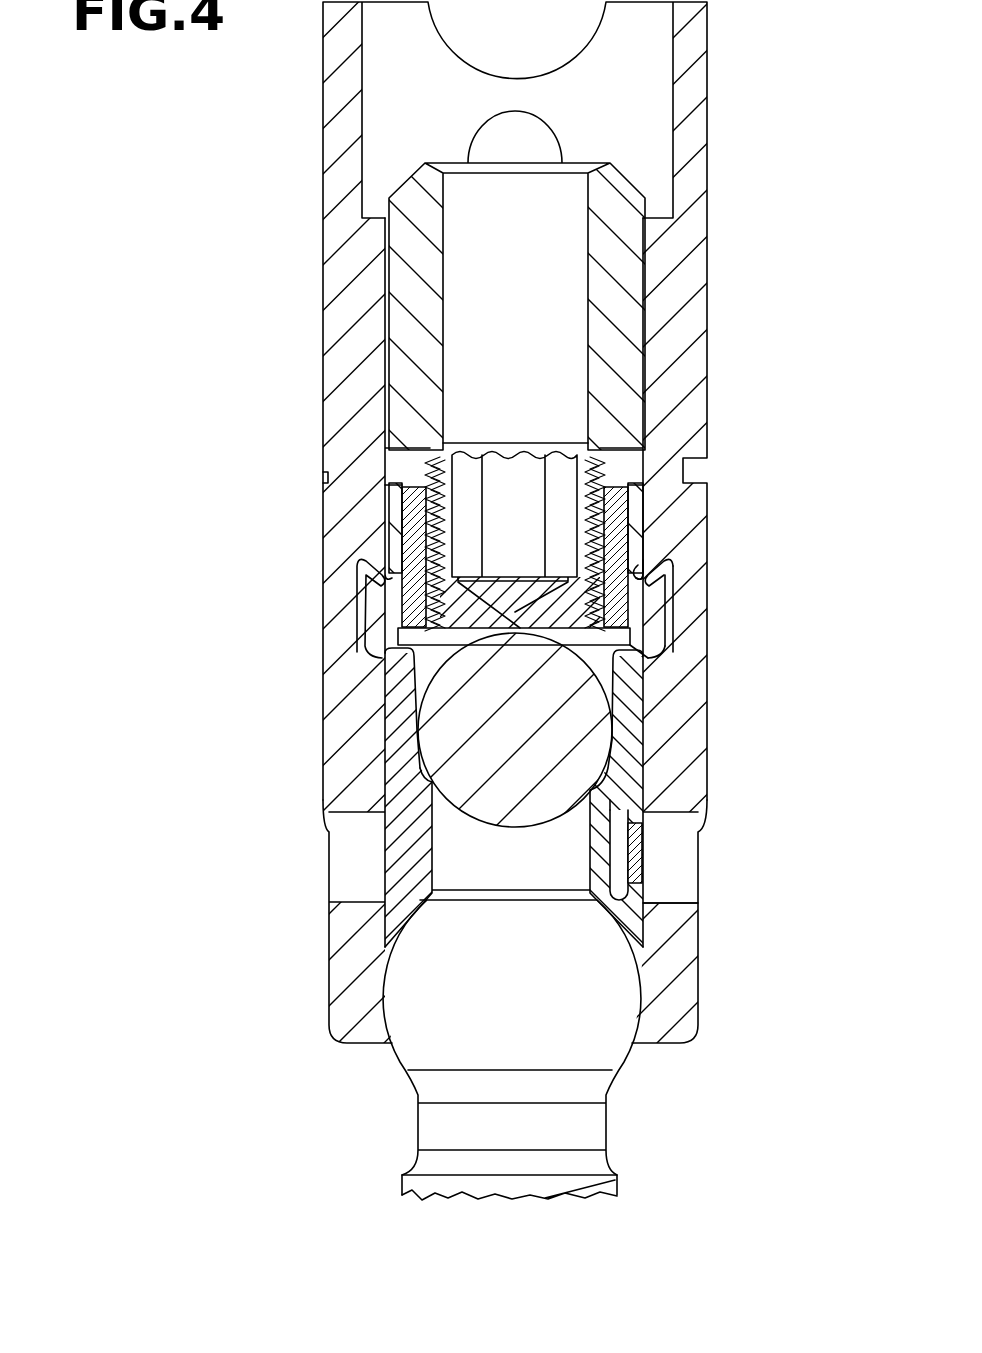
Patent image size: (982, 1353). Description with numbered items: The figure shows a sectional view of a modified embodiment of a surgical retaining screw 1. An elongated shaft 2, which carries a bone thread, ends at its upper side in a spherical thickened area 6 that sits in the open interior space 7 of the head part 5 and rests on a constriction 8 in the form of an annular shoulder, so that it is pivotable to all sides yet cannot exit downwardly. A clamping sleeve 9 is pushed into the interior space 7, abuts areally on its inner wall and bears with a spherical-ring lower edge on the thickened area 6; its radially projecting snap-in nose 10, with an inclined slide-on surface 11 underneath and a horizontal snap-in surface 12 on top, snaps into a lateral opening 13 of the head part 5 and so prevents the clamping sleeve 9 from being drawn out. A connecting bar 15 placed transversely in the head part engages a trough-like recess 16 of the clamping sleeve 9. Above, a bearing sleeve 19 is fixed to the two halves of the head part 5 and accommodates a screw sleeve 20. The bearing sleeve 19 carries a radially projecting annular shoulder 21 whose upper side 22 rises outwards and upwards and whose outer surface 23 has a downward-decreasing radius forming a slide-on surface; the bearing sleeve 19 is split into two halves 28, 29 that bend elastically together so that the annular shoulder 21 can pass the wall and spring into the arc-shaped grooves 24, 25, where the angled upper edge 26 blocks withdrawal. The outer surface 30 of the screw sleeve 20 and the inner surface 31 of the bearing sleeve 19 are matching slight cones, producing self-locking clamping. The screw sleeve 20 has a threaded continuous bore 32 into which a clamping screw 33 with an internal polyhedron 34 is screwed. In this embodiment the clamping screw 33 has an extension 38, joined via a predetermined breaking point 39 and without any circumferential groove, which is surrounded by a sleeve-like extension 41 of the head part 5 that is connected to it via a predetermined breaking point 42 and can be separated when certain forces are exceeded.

The surgical retaining screw 1 is at (726, 109).
The shaft 2 is at (626, 1181).
The head part 5 is at (720, 746).
The spherical thickened area 6 is at (512, 1004).
The interior space 7 is at (388, 736).
The constriction 8 is at (640, 1012).
The clamping sleeve 9 is at (377, 783).
The snap-in nose 10 is at (646, 854).
The slide-on surface 11 is at (648, 866).
The snap-in surface 12 is at (645, 846).
The opening 13 is at (686, 899).
The connecting bar 15 is at (522, 724).
The trough-like recess 16 is at (425, 776).
The bearing sleeve 19 is at (386, 508).
The screw sleeve 20 is at (620, 484).
The annular shoulder 21 is at (666, 575).
The upper side 22 is at (655, 546).
The outer surface 23 is at (674, 606).
The arc-shaped groove 24 is at (376, 646).
The arc-shaped groove 25 is at (672, 636).
The upper edge 26 is at (420, 562).
The half of bearing sleeve 28 is at (380, 682).
The half of bearing sleeve 29 is at (656, 660).
The outer surface 30 is at (412, 530).
The inner surface 31 is at (642, 522).
The bore 32 is at (428, 596).
The clamping screw 33 is at (432, 474).
The internal polyhedron 34 is at (530, 534).
The extension 38 is at (652, 270).
The predetermined breaking point 39 is at (577, 442).
The extension 41 is at (313, 239).
The predetermined breaking point 42 is at (330, 480).